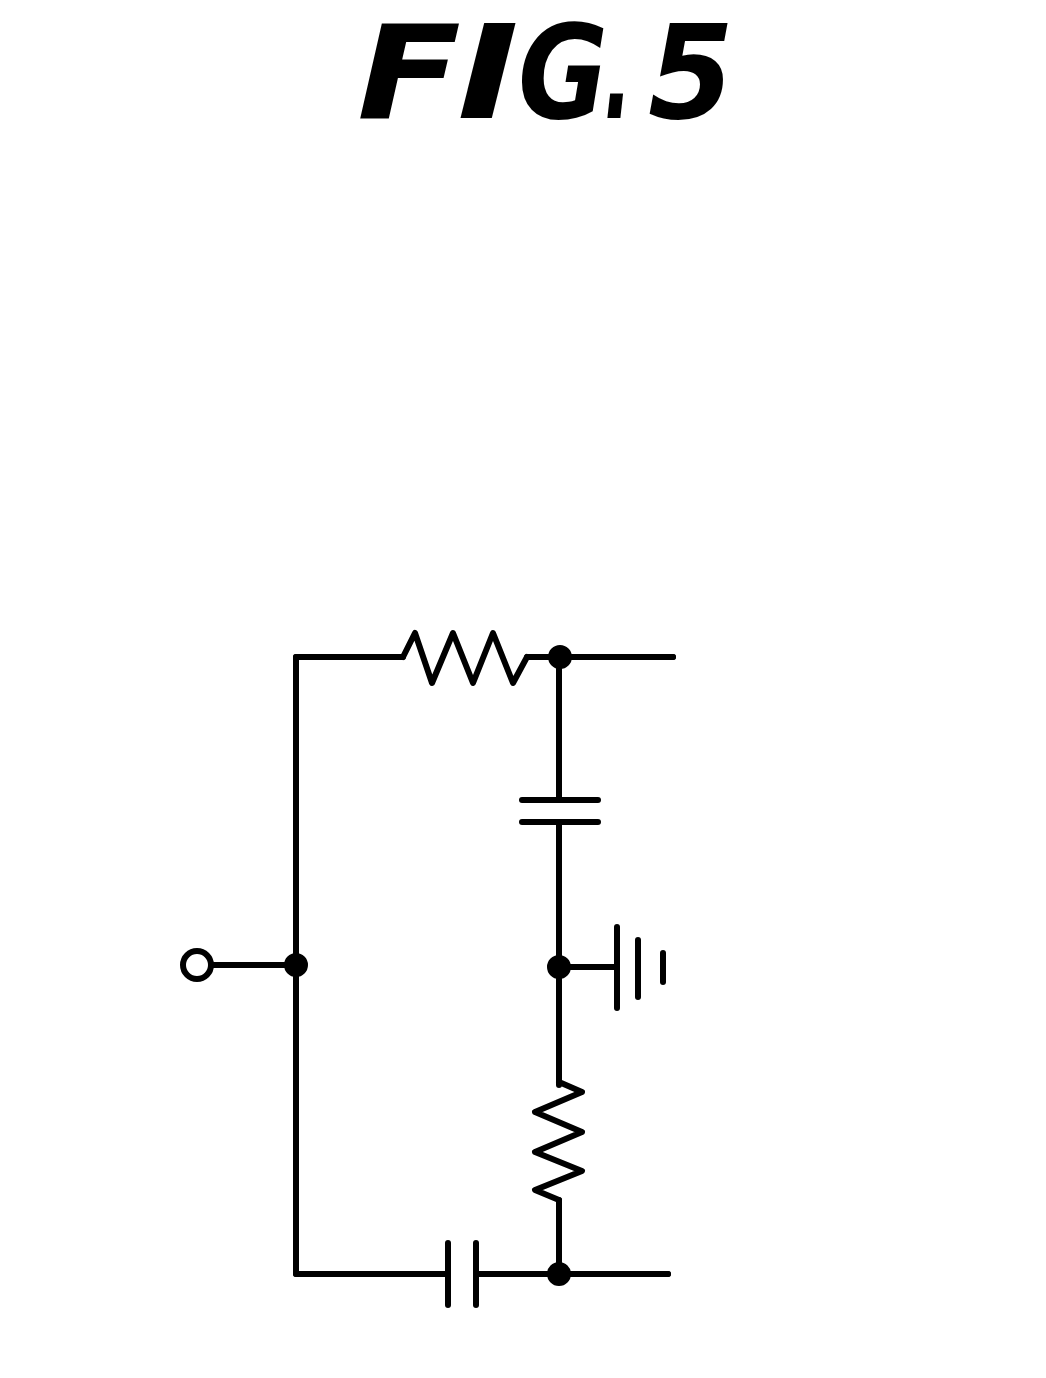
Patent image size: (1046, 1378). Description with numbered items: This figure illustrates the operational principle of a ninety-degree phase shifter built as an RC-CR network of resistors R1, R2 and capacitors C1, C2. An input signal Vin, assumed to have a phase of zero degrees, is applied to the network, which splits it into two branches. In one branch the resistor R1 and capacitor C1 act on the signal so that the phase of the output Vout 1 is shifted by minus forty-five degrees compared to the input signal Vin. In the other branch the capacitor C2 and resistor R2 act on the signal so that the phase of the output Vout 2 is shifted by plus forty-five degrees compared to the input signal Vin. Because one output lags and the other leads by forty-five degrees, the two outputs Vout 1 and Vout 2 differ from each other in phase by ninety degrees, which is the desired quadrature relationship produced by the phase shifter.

The resistor R1 is at (465, 619).
The capacitor C1 is at (608, 813).
The resistor R2 is at (609, 1141).
The capacitor C2 is at (464, 1231).
The input signal Vin is at (174, 965).
The output Vout 1 is at (741, 665).
The output Vout 2 is at (742, 1275).